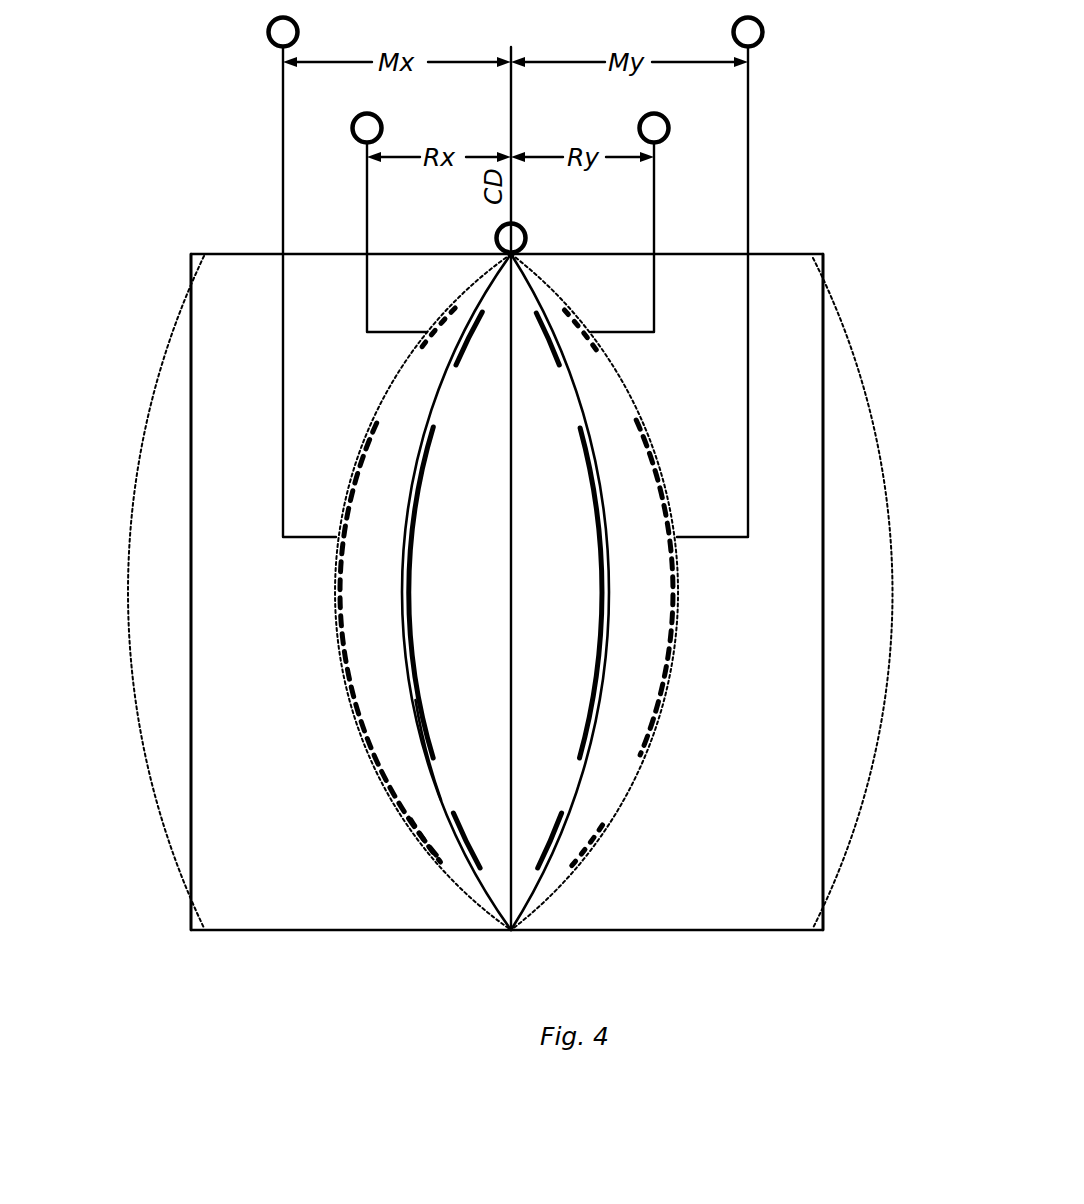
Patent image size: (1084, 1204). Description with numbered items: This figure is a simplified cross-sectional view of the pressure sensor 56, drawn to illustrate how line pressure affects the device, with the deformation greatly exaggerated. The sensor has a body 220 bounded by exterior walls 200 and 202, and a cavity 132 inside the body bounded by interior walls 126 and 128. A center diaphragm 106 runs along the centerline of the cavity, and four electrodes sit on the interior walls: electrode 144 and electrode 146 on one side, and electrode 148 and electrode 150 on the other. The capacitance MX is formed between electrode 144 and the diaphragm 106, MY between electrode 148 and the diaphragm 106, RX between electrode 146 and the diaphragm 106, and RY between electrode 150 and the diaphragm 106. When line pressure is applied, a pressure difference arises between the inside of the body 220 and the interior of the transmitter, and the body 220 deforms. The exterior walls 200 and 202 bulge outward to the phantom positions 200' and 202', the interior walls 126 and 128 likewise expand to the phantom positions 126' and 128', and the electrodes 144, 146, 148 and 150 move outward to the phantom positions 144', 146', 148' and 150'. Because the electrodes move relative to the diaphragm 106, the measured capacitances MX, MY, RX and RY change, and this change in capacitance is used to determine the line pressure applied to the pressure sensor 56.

The pressure sensor 56 is at (227, 212).
The diaphragm 106 is at (511, 614).
The interior wall 126 is at (402, 592).
The expanded position of interior wall 126' is at (408, 592).
The interior wall 128 is at (599, 592).
The expanded position of interior wall 128' is at (616, 592).
The cavity 132 is at (435, 584).
The electrode 144 is at (365, 750).
The displaced position of electrode 144' is at (345, 641).
The electrode 146 is at (415, 858).
The displaced position of electrode 146' is at (370, 841).
The electrode 148 is at (661, 593).
The displaced position of electrode 148' is at (686, 587).
The electrode 150 is at (584, 541).
The displaced position of electrode 150' is at (540, 580).
The exterior wall 200 is at (135, 592).
The expanded position of exterior wall 200' is at (120, 592).
The exterior wall 202 is at (870, 592).
The expanded position of exterior wall 202' is at (884, 593).
The body 220 is at (781, 296).